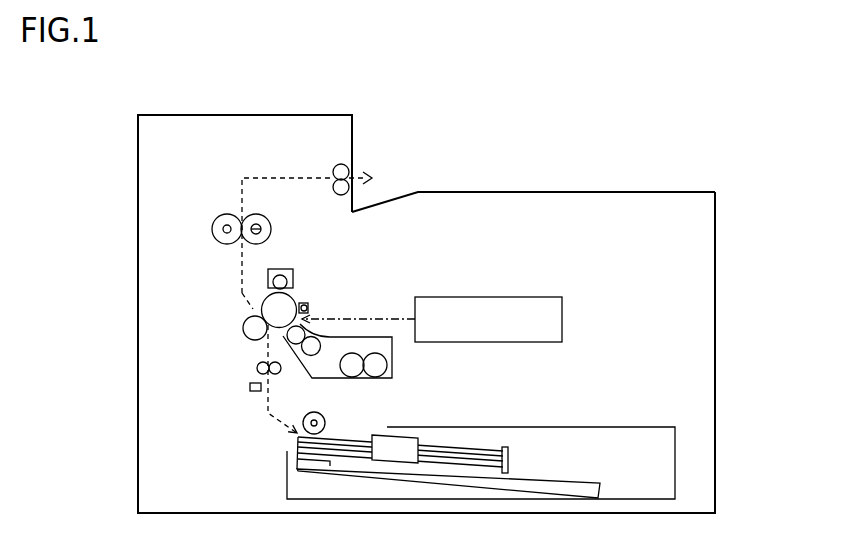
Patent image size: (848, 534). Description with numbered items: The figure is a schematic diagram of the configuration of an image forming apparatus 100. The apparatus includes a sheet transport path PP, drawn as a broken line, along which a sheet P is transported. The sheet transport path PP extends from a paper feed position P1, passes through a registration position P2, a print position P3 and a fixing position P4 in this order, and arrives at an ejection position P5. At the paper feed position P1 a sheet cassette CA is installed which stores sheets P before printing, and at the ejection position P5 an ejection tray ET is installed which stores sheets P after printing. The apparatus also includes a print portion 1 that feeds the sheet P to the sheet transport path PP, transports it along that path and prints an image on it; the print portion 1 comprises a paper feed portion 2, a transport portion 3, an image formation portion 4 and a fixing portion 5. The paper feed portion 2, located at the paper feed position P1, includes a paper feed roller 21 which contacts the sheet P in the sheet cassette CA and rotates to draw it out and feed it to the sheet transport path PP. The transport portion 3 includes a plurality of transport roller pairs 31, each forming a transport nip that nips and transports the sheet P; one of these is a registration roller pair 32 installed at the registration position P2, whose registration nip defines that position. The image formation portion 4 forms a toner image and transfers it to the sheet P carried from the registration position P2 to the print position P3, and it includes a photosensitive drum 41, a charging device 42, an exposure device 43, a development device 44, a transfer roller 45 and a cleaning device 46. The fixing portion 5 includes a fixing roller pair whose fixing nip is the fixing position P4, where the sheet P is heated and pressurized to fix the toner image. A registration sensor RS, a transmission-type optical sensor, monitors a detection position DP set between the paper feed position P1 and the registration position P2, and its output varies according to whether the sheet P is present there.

The image forming apparatus 100 is at (420, 300).
The print portion 1 is at (121, 172).
The paper feed portion 2 is at (352, 411).
The paper feed roller 21 is at (323, 413).
The transport portion 3 is at (246, 253).
The transport roller pair 31 is at (341, 179).
The registration roller pair 32 is at (269, 368).
The image formation portion 4 is at (373, 305).
The photosensitive drum 41 is at (290, 303).
The charging device 42 is at (309, 305).
The exposure device 43 is at (510, 300).
The development device 44 is at (387, 345).
The transfer roller 45 is at (244, 327).
The cleaning device 46 is at (288, 270).
The fixing portion 5 is at (215, 211).
The ejection tray ET is at (526, 190).
The sheet cassette CA is at (623, 427).
The sheet P is at (485, 452).
The paper feed position P1 is at (296, 432).
The registration position P2 is at (273, 378).
The print position P3 is at (255, 312).
The fixing position P4 is at (240, 245).
The ejection position P5 is at (357, 164).
The registration sensor RS is at (249, 388).
The detection position DP is at (267, 400).
The sheet transport path PP is at (266, 348).